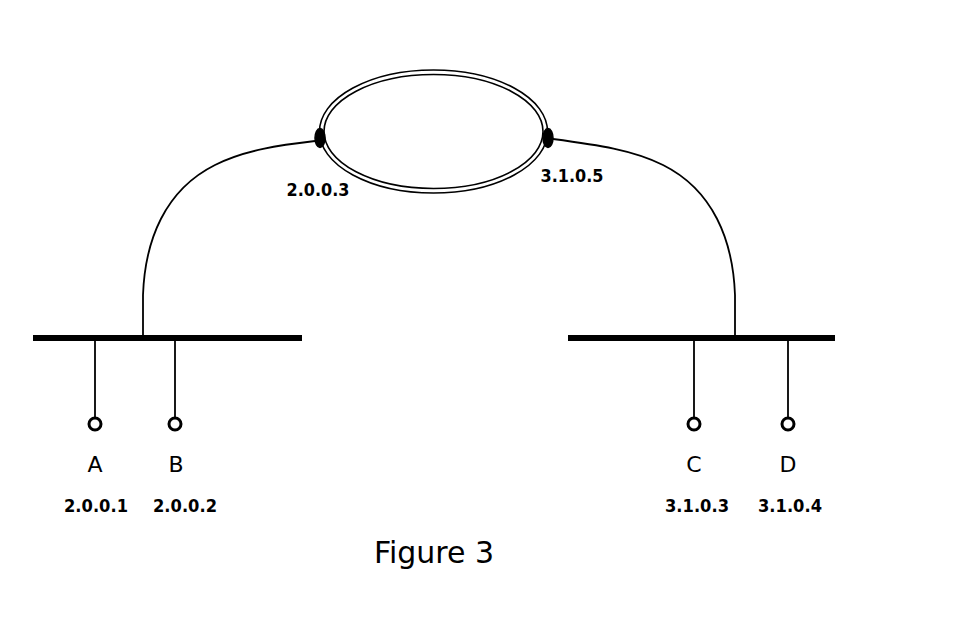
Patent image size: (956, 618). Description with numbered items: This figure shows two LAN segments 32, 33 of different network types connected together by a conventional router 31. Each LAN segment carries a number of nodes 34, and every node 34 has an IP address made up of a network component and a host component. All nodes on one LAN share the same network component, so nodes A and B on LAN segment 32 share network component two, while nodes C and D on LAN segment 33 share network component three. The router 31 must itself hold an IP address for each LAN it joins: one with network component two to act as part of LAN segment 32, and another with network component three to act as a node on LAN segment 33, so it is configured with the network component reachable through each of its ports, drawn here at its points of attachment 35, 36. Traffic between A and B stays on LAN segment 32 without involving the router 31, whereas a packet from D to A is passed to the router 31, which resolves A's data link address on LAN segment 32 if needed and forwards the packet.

The router 31 is at (501, 69).
The LAN segment 32 is at (207, 325).
The LAN segment 33 is at (609, 309).
The node 34 is at (199, 425).
The first router/hub 35 is at (303, 128).
The second router/hub 36 is at (570, 127).